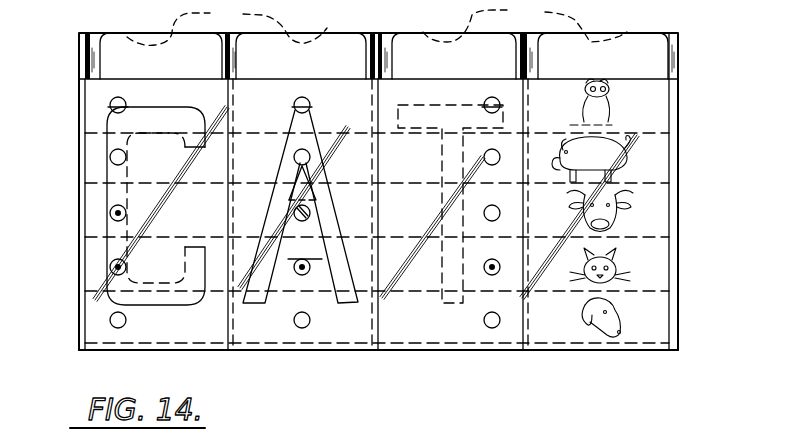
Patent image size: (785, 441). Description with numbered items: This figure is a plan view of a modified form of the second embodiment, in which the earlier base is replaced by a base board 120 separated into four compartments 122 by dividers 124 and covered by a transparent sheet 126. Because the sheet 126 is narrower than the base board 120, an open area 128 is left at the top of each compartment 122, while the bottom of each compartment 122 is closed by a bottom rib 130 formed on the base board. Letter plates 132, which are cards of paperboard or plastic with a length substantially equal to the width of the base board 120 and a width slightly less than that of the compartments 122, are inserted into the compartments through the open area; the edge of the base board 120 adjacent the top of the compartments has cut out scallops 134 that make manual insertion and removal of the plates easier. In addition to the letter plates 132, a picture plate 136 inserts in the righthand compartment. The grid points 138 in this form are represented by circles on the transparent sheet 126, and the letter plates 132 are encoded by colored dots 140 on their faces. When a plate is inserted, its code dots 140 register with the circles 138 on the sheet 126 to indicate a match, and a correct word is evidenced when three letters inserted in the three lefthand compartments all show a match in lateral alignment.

The base board 120 is at (678, 235).
The compartments 122 is at (107, 79).
The dividers 124 is at (535, 58).
The transparent sheet 126 is at (203, 88).
The open area 128 is at (392, 45).
The bottom rib 130 is at (293, 348).
The letter plates 132 is at (112, 40).
The cut out scallops 134 is at (377, 24).
The picture plate 136 is at (647, 40).
The grid points 138 is at (110, 104).
The colored dots 140 is at (127, 260).